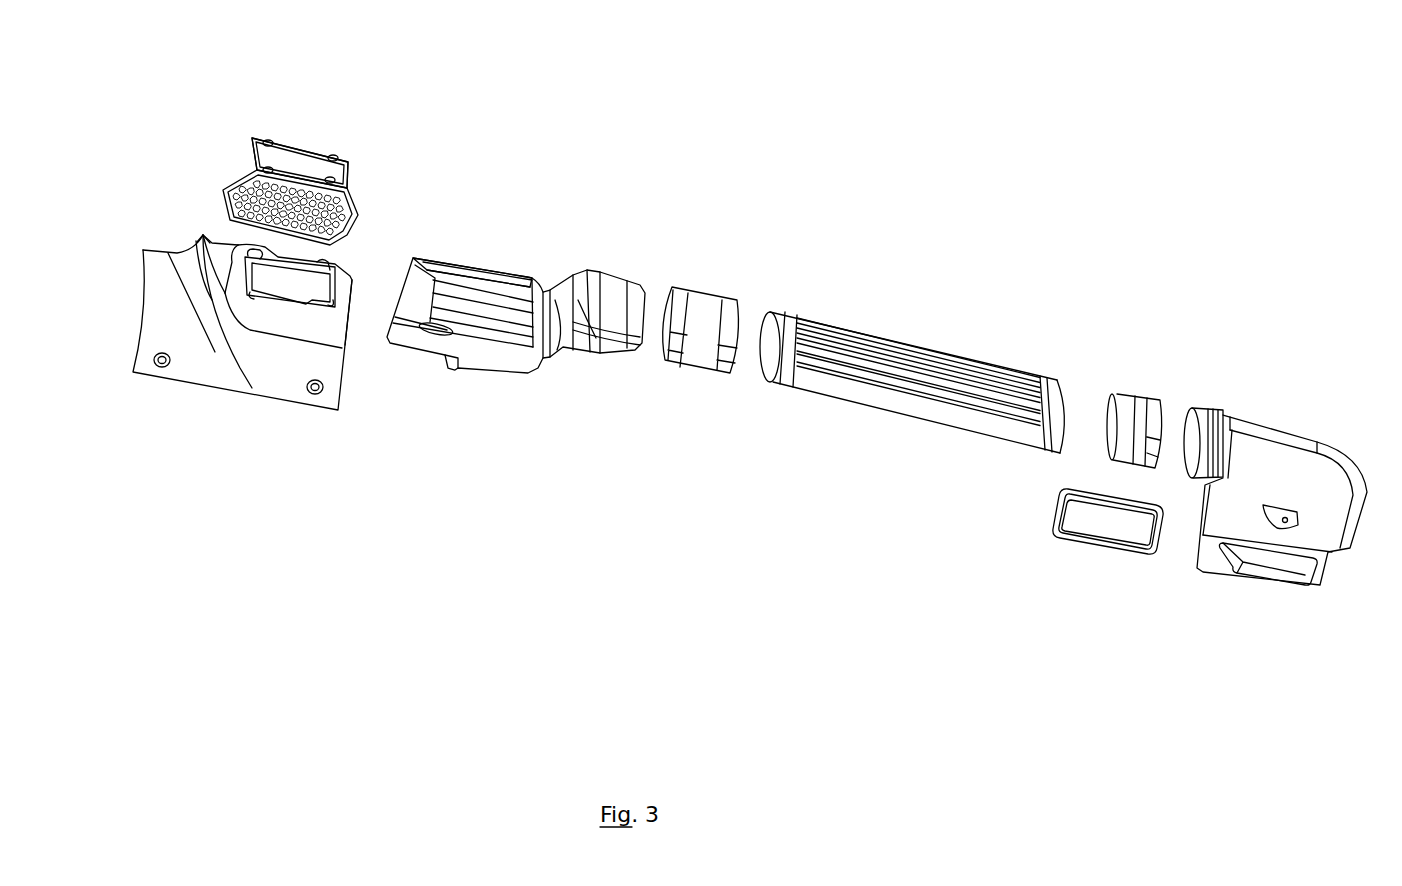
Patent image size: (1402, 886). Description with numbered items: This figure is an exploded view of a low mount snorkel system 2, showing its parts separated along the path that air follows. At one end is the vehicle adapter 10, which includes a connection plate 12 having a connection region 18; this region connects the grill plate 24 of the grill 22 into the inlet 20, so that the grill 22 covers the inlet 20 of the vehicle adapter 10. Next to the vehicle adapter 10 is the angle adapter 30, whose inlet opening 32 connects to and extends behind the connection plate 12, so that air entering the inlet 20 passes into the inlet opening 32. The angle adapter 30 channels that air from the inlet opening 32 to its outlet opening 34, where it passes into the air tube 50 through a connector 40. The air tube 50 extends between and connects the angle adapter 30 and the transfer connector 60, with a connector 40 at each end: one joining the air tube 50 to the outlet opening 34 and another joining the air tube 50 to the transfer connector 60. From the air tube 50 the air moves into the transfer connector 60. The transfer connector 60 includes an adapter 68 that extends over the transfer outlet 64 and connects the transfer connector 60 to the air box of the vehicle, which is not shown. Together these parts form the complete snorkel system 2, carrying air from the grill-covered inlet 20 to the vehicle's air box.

The snorkel system 2 is at (912, 160).
The vehicle adapter 10 is at (245, 418).
The connection plate 12 is at (217, 298).
The connection region 18 is at (203, 230).
The inlet 20 is at (320, 328).
The grill 22 is at (225, 192).
The grill plate 24 is at (327, 170).
The angle adapter 30 is at (457, 371).
The inlet opening 32 is at (507, 277).
The outlet opening 34 is at (602, 355).
The connector 40 is at (710, 302).
The air tube 50 is at (905, 355).
The transfer connector 60 is at (1300, 382).
The transfer outlet 64 is at (1345, 560).
The adapter 68 is at (1077, 538).